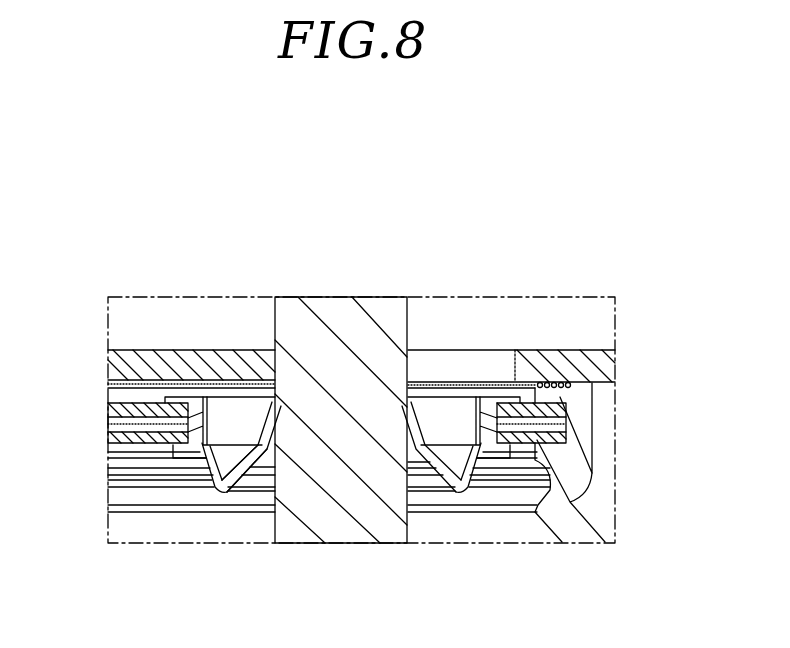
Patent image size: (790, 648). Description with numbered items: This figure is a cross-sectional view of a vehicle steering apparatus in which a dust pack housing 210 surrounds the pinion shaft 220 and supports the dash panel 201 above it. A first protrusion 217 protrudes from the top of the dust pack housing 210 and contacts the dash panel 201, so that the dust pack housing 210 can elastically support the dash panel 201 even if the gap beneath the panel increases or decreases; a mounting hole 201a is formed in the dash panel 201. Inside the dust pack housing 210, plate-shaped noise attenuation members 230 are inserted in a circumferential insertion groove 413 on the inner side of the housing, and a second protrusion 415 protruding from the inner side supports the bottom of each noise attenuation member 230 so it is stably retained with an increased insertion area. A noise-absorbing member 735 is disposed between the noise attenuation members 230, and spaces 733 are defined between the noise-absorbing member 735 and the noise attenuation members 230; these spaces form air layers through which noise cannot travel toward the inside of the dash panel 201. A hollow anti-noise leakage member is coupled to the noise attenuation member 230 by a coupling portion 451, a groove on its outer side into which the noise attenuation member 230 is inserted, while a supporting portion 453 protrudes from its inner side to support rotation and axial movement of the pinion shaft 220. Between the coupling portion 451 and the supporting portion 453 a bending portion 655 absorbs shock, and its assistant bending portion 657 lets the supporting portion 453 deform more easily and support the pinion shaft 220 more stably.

The dust pack housing 210 is at (582, 528).
The pinion shaft 220 is at (292, 303).
The dash panel 201 is at (430, 357).
The mounting hole 201a is at (502, 362).
The first protrusion 217 is at (572, 380).
The space 733 is at (136, 404).
The noise-absorbing member 735 is at (132, 400).
The noise attenuation member 230 is at (120, 442).
The insertion groove 413 is at (568, 440).
The coupling portion 451 is at (187, 407).
The supporting portion 453 is at (258, 405).
The bending portion 655 is at (212, 472).
The assistant bending portion 657 is at (260, 447).
The second protrusion 415 is at (533, 461).